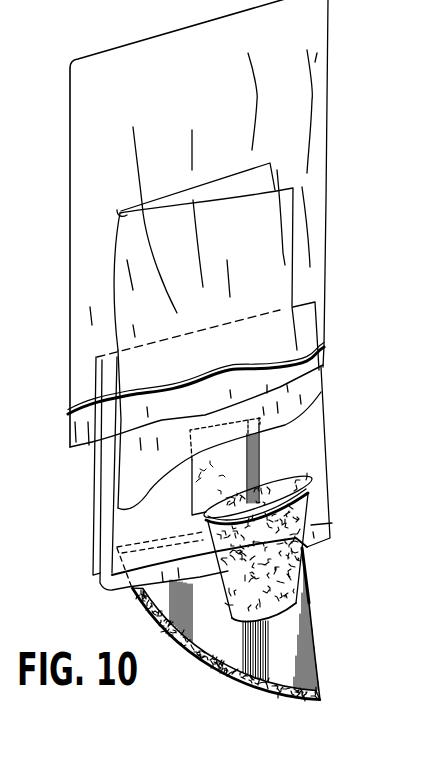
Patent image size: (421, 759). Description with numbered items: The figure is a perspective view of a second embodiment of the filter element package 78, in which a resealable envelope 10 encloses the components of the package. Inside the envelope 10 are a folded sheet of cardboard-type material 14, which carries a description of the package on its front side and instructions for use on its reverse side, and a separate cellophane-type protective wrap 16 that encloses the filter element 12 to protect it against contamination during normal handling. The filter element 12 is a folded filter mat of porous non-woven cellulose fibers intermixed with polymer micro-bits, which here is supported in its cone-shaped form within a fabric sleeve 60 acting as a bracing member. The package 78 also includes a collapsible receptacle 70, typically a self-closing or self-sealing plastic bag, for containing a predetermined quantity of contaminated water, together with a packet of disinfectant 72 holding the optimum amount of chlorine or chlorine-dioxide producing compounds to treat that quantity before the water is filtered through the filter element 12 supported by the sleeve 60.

The resealable envelope 10 is at (80, 308).
The filter element package 78 is at (335, 213).
The collapsible receptacle 70 is at (292, 406).
The packet of disinfectant 72 is at (251, 456).
The fabric sleeve 60 is at (303, 519).
The folded sheet of cardboard-type material 14 is at (119, 507).
The cellophane-type protective wrap 16 is at (101, 586).
The filter element 12 is at (168, 641).